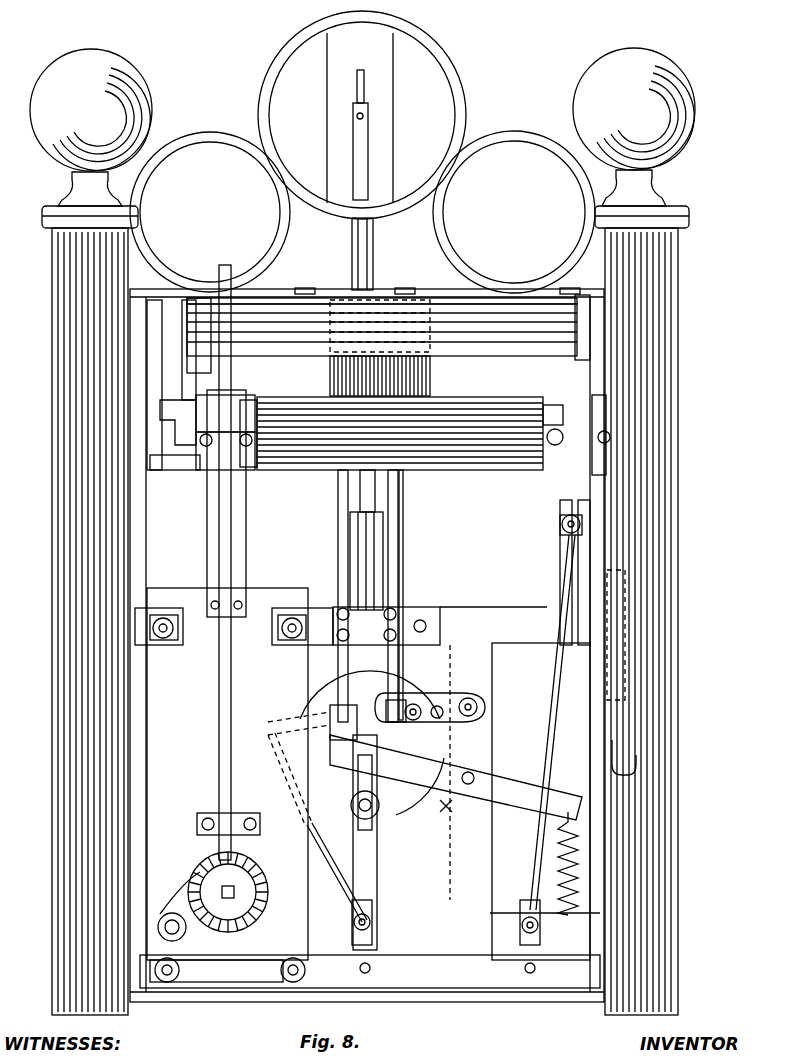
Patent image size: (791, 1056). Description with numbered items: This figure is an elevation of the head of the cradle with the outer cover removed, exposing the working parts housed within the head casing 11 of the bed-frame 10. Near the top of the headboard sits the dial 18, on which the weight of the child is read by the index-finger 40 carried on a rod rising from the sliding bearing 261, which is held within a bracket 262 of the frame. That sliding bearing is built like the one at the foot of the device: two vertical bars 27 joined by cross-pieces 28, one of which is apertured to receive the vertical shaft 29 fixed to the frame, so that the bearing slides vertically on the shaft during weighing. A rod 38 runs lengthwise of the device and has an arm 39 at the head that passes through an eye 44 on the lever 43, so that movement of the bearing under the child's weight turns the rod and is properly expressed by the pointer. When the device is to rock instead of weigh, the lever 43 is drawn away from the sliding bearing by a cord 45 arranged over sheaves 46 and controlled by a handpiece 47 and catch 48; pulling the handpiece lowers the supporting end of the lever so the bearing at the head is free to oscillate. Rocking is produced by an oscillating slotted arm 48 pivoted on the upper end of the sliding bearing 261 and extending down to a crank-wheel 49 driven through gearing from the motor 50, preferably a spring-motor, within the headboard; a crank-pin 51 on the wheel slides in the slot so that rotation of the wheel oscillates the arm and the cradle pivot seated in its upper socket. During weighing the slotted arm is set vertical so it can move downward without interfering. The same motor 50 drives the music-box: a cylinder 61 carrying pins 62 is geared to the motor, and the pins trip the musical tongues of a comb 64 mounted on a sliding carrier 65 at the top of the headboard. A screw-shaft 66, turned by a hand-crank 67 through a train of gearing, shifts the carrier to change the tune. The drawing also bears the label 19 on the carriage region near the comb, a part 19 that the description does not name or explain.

The bed-frame 10 is at (670, 645).
The head casing 11 is at (367, 751).
The dial 18 is at (362, 150).
The carriage 19 is at (388, 338).
The vertical bars 27 is at (338, 550).
The cross-pieces 28 is at (378, 497).
The vertical shaft 29 is at (385, 525).
The rod 38 is at (482, 712).
The arm 39 is at (370, 695).
The index-finger 40 is at (352, 117).
The lever 43 is at (425, 766).
The eye 44 is at (332, 740).
The cord 45 is at (322, 870).
The sheaves 46 is at (372, 922).
The handpiece 47 is at (638, 768).
The slotted arm 48 is at (378, 830).
The crank-wheel 49 is at (424, 789).
The motor 50 is at (213, 603).
The crank-pin 51 is at (351, 810).
The cylinder 61 is at (401, 433).
The pins 62 is at (233, 385).
The comb 64 is at (435, 362).
The sliding carrier 65 is at (380, 326).
The screw-shaft 66 is at (455, 298).
The hand-crank 67 is at (610, 437).
The sliding bearing 261 is at (403, 548).
The bracket 262 is at (400, 628).